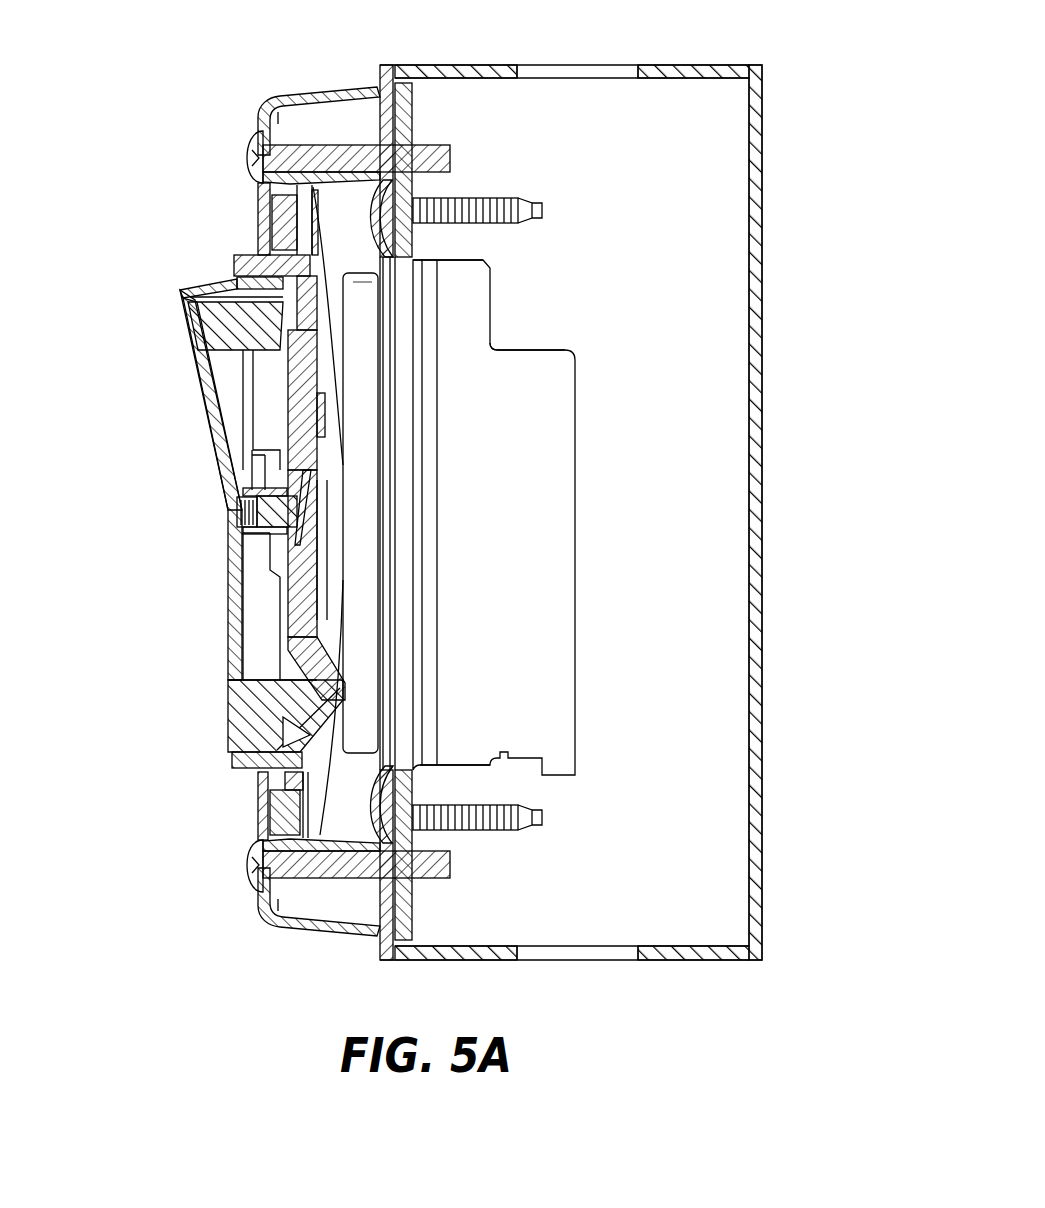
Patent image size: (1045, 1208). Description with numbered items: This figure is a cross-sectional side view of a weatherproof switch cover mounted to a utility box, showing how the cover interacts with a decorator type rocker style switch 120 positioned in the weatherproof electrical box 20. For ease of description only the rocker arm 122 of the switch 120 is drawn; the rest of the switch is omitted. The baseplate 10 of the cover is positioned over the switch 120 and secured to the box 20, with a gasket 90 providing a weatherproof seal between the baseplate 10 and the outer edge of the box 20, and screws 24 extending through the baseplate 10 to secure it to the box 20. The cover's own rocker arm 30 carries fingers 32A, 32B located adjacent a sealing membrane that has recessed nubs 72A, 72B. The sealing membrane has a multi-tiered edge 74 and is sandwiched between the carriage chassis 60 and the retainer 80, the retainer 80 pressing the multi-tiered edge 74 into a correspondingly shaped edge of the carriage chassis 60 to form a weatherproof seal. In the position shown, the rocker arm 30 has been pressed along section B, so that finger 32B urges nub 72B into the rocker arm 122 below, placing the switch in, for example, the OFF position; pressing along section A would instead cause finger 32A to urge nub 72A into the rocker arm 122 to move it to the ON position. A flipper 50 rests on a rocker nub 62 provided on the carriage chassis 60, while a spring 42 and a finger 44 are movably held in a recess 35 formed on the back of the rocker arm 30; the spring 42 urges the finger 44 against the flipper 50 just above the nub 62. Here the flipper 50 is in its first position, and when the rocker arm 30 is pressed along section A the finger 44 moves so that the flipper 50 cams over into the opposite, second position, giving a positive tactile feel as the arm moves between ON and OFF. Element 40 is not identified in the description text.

The baseplate 10 is at (322, 93).
The weatherproof electrical box 20 is at (685, 65).
The screws 24 is at (252, 140).
The rocker arm 30 is at (193, 285).
The finger 32A is at (222, 325).
The finger 32B is at (243, 707).
The recess 35 is at (242, 492).
The sleeve wall 40 is at (228, 578).
The spring 42 is at (240, 518).
The finger 44 is at (245, 475).
The flipper 50 is at (325, 540).
The carriage chassis 60 is at (240, 255).
The rocker nub 62 is at (300, 520).
The multi-tiered edge 74 is at (257, 785).
The retainer 80 is at (315, 238).
The gasket 90 is at (398, 65).
The decorator type rocker style switch 120 is at (576, 520).
The rocker arm 122 is at (340, 447).
The recessed nub 72A is at (308, 330).
The recessed nub 72B is at (340, 685).
The section A is at (172, 301).
The section B is at (214, 685).